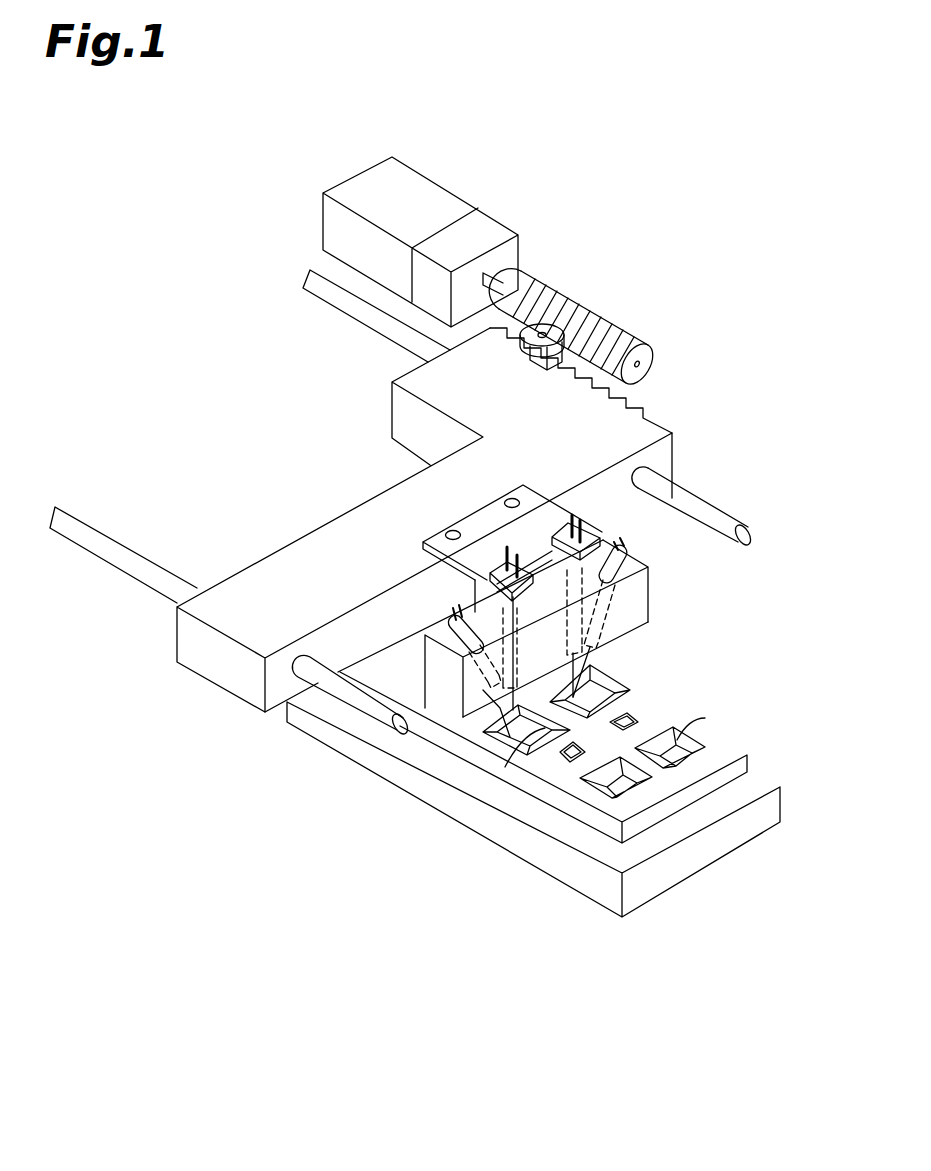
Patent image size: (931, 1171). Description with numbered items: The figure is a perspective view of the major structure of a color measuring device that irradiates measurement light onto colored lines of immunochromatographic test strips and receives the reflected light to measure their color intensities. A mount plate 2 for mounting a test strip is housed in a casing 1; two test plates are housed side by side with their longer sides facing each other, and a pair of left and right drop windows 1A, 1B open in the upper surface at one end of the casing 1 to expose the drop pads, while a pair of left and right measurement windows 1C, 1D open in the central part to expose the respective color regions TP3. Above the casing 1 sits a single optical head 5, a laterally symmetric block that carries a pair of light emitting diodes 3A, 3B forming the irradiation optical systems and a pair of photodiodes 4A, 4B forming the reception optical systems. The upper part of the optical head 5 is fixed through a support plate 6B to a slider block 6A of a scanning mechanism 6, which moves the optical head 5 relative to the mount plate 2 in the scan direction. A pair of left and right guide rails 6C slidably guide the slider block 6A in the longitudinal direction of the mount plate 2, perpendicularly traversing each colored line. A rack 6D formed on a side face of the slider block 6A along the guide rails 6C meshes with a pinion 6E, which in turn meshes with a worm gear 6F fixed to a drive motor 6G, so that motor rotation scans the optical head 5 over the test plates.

The casing 1 is at (738, 740).
The drop window 1A is at (580, 779).
The drop window 1B is at (706, 748).
The measurement window 1C is at (527, 756).
The measurement window 1D is at (590, 686).
The mount plate 2 is at (594, 903).
The light emitting diode 3A is at (455, 624).
The light emitting diode 3B is at (622, 575).
The photodiode 4A is at (488, 576).
The photodiode 4B is at (607, 533).
The optical head 5 is at (640, 633).
The scanning mechanism 6 is at (598, 285).
The slider block 6A is at (423, 543).
The support plate 6B is at (480, 508).
The guide rail 6C is at (78, 521).
The rack 6D is at (637, 420).
The pinion 6E is at (572, 366).
The worm gear 6F is at (614, 320).
The drive motor 6G is at (437, 186).
The color region TP3 is at (505, 767).